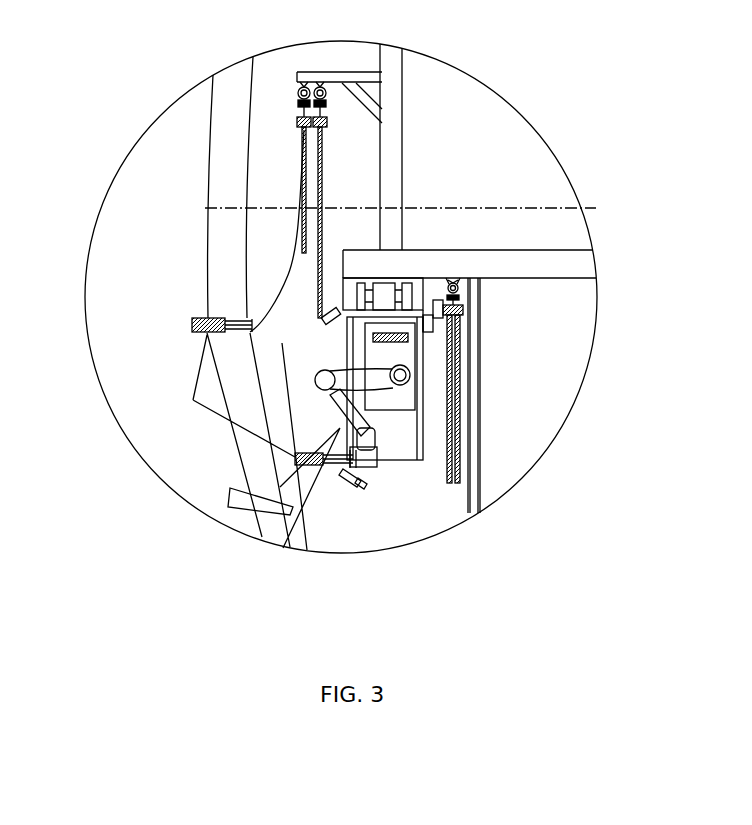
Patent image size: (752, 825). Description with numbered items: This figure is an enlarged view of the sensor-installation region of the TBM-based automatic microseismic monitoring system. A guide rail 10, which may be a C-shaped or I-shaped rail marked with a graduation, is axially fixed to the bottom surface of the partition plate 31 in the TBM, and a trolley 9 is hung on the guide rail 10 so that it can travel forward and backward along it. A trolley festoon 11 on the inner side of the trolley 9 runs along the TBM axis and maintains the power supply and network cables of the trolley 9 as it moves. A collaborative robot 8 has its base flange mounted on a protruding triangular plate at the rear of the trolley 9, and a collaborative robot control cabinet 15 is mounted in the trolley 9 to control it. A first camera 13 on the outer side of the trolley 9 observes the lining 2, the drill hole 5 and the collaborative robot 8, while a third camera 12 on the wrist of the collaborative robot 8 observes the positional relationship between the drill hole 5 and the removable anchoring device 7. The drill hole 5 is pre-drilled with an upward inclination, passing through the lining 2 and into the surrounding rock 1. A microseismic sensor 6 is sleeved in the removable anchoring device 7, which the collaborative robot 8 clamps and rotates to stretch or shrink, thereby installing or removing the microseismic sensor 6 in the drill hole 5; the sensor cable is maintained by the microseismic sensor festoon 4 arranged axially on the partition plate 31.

The surrounding rock 1 is at (163, 152).
The lining 2 is at (218, 162).
The microseismic sensor festoon 4 is at (323, 177).
The drill hole 5 is at (232, 500).
The microseismic sensor 6 is at (248, 441).
The removable anchoring device 7 is at (250, 329).
The collaborative robot 8 is at (282, 550).
The trolley 9 is at (418, 449).
The guide rail 10 is at (400, 280).
The trolley festoon 11 is at (455, 430).
The third camera 12 is at (363, 490).
The first camera 13 is at (398, 330).
The collaborative robot control cabinet 15 is at (350, 323).
The partition plate 31 is at (457, 263).